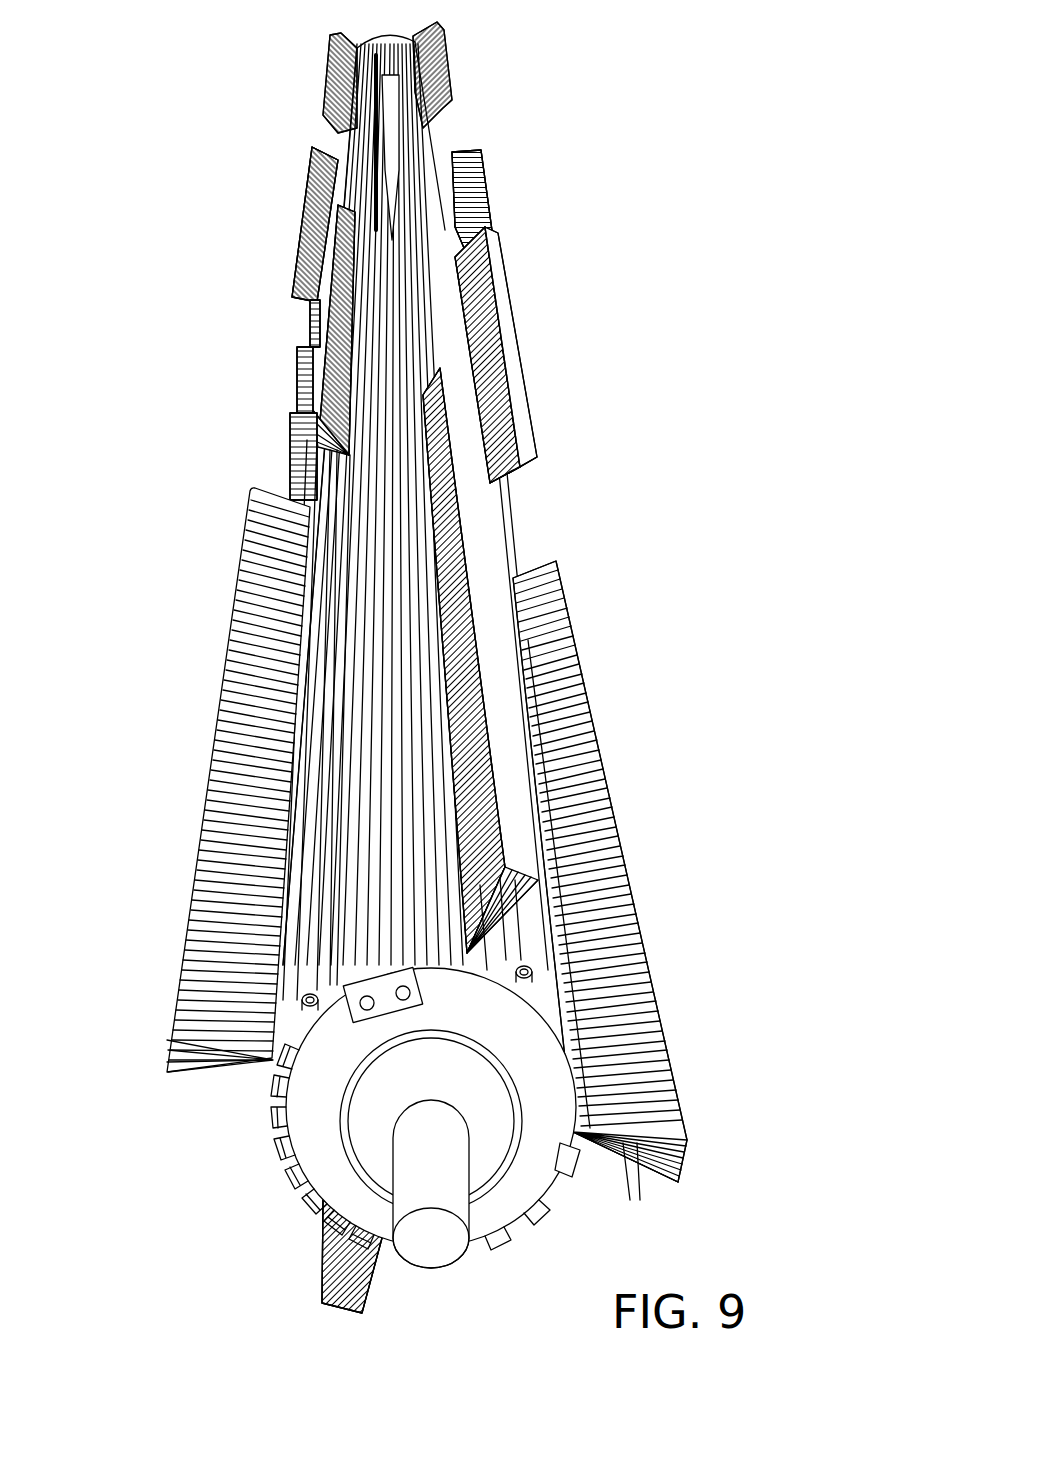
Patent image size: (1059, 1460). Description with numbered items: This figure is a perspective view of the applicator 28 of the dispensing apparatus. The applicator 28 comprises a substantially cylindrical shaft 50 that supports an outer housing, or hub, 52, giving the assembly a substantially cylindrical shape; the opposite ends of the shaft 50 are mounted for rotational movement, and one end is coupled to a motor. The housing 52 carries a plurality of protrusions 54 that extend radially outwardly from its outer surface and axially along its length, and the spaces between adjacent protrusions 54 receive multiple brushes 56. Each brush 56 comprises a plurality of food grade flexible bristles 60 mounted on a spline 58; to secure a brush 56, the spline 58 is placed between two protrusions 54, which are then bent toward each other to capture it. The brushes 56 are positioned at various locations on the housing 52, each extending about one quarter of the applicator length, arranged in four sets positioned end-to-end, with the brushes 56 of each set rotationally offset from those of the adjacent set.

The applicator 28 is at (628, 769).
The shaft 50 is at (426, 1250).
The housing 52 is at (538, 1170).
The protrusions 54 is at (365, 958).
The brushes 56 is at (330, 75).
The spline 58 is at (284, 1063).
The bristles 60 is at (650, 1148).